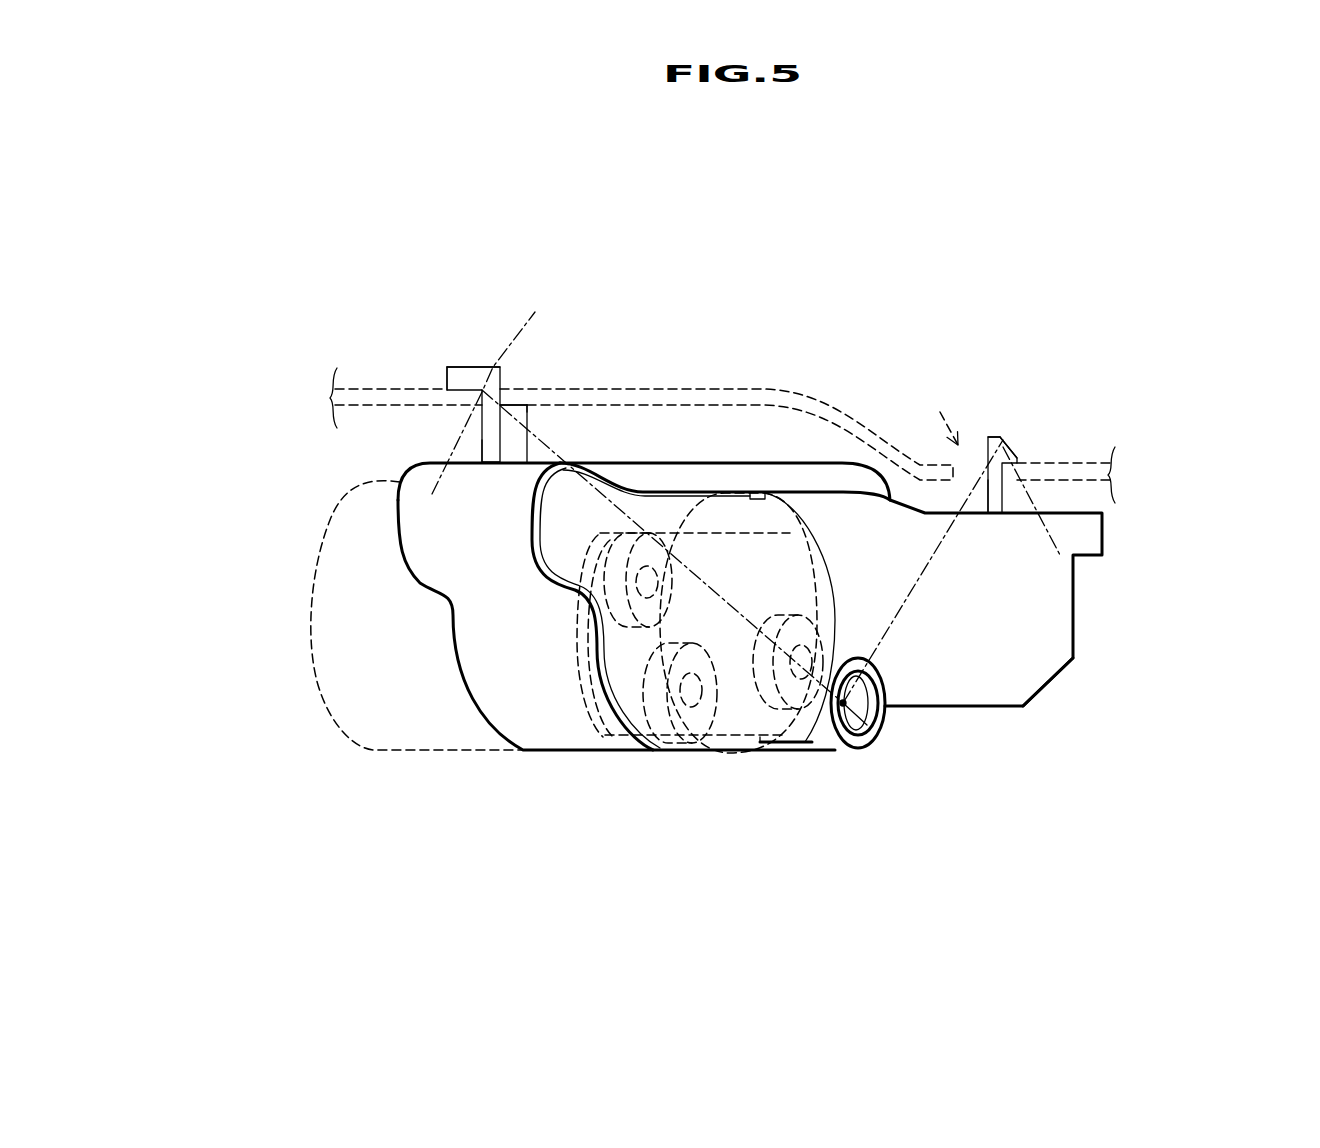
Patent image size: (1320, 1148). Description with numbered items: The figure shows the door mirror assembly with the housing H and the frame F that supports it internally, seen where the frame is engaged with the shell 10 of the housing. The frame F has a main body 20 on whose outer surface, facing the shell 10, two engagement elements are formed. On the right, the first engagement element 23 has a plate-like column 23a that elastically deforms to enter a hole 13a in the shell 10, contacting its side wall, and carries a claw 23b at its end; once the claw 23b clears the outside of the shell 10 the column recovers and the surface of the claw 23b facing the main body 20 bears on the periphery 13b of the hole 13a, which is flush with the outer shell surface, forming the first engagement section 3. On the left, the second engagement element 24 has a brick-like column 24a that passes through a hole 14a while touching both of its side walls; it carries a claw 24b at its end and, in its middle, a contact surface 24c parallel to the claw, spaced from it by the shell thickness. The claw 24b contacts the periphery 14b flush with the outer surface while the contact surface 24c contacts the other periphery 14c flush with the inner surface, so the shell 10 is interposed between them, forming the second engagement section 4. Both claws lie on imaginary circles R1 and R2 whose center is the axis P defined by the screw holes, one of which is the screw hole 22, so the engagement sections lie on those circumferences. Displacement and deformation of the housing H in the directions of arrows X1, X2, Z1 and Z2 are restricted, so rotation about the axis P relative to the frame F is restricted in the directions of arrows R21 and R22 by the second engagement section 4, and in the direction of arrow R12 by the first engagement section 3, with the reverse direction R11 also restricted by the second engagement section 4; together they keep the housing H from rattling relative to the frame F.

The first engagement section 3 is at (972, 405).
The second engagement section 4 is at (442, 317).
The shell 10 is at (823, 388).
The housing H is at (796, 360).
The hole 13a is at (1000, 440).
The periphery 13b is at (1030, 455).
The hole 14a is at (452, 412).
The periphery 14b is at (436, 385).
The periphery 14c is at (528, 407).
The main body 20 is at (947, 645).
The screw hole 22 is at (852, 740).
The first engagement element 23 is at (995, 433).
The column 23a is at (988, 472).
The claw 23b is at (1008, 445).
The second engagement element 24 is at (477, 357).
The column 24a is at (483, 440).
The claw 24b is at (457, 375).
The contact surface 24c is at (505, 403).
The axis P is at (875, 730).
The frame F is at (1053, 720).
The imaginary circle R1 is at (1050, 530).
The arrow R11 is at (1082, 612).
The arrow R12 is at (955, 407).
The imaginary circle R2 is at (432, 494).
The arrow R21 is at (567, 265).
The arrow R22 is at (418, 558).
The arrow X1 is at (1256, 612).
The arrow X2 is at (240, 615).
The arrow Z1 is at (728, 210).
The arrow Z2 is at (728, 855).